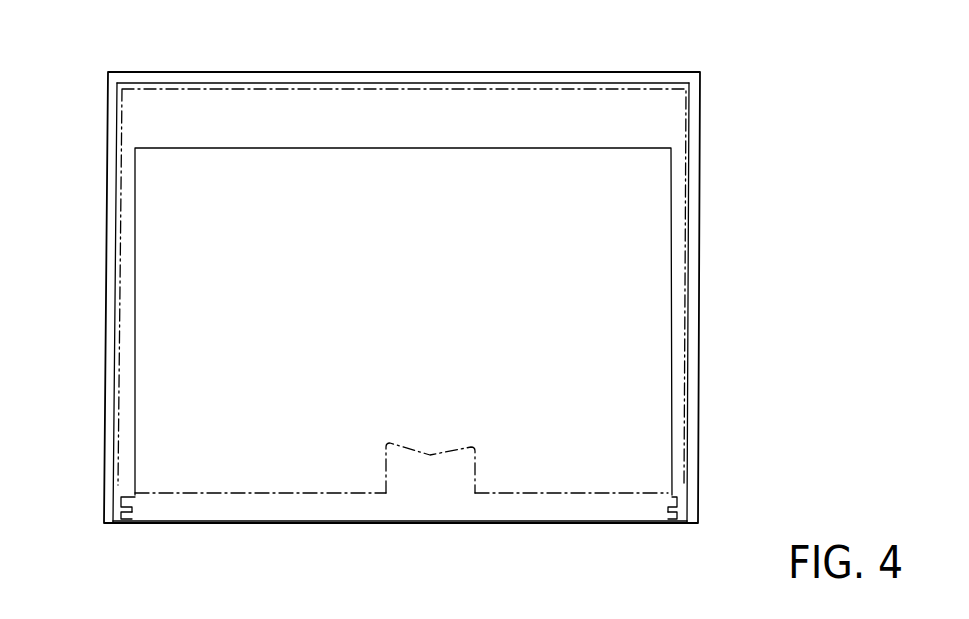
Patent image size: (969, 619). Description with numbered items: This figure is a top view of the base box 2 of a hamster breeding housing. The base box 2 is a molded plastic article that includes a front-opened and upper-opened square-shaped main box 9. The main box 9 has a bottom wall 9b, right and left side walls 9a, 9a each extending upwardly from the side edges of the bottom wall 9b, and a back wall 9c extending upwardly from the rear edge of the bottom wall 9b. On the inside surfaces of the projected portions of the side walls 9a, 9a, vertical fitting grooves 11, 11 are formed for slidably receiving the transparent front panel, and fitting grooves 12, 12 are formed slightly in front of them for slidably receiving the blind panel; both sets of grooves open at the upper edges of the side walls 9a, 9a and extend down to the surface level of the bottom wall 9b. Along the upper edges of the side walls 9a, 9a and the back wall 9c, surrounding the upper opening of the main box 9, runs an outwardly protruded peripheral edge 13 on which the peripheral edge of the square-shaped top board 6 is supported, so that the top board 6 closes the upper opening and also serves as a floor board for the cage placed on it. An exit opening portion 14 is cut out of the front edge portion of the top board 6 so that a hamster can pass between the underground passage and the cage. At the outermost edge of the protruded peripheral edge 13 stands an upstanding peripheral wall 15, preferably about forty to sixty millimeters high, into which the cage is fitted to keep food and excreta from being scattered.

The base box 2 is at (100, 182).
The main box 9 is at (401, 302).
The side wall 9a is at (107, 330).
The bottom wall 9b is at (310, 522).
The back wall 9c is at (394, 77).
The top board 6 is at (498, 493).
The fitting groove 11 is at (128, 502).
The fitting groove 12 is at (132, 518).
The outwardly protruded peripheral edge 13 is at (647, 128).
The exit opening portion 14 is at (424, 450).
The upstanding peripheral wall 15 is at (606, 75).